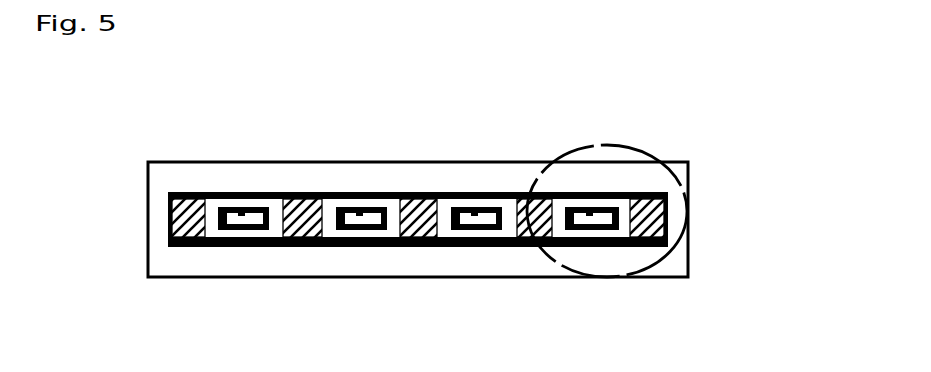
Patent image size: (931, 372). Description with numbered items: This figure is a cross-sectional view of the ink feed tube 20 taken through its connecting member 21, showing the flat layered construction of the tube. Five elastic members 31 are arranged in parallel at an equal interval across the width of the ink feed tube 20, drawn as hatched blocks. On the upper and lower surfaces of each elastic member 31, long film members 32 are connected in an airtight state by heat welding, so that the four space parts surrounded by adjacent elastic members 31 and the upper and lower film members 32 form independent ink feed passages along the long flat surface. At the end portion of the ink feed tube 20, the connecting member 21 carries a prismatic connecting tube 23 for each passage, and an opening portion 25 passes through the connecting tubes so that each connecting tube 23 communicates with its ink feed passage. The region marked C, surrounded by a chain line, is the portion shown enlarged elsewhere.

The ink feed tube 20 is at (435, 212).
The connecting member 21 is at (148, 234).
The connecting tube 23 is at (327, 193).
The opening portion 25 is at (239, 193).
The elastic member 31 is at (647, 177).
The film member 32 is at (406, 193).
The C portion C is at (596, 145).